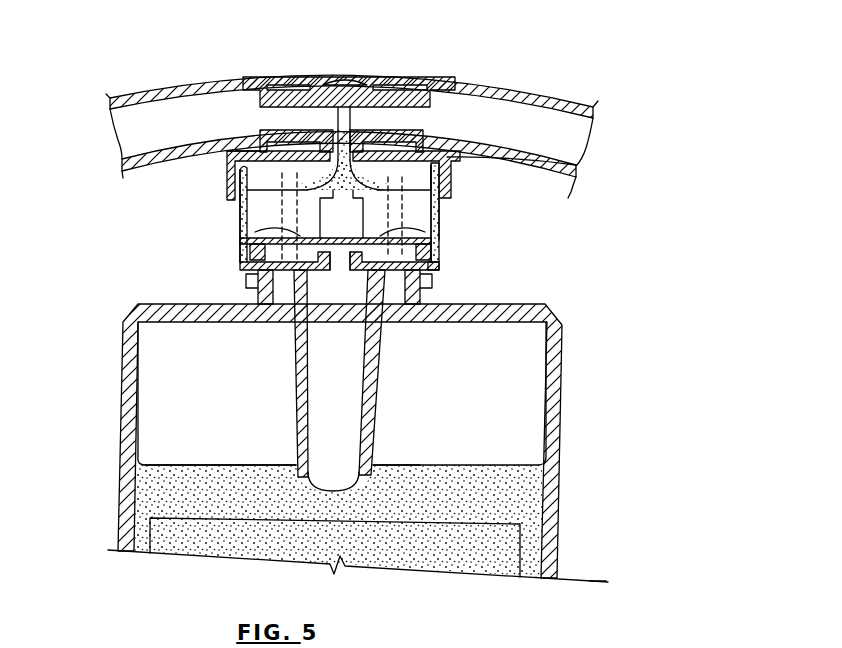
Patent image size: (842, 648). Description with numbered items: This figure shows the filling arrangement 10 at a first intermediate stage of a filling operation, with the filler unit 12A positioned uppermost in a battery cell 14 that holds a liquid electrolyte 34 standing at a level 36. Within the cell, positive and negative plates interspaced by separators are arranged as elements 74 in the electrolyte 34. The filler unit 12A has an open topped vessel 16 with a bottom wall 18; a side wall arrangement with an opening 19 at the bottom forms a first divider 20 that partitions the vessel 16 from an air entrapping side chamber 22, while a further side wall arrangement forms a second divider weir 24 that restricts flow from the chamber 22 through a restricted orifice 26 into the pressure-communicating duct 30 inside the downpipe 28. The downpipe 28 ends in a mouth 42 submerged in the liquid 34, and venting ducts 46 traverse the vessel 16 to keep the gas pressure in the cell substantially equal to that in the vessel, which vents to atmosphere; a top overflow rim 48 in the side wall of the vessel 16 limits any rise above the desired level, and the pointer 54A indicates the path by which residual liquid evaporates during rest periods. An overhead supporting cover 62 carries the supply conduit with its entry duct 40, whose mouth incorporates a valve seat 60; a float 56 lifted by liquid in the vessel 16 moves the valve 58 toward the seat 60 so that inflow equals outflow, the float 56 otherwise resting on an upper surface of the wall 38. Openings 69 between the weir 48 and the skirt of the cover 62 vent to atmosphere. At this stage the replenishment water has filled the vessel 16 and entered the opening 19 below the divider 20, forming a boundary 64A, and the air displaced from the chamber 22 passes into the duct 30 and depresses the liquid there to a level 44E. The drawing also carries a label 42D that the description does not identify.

The filling arrangement 10 is at (556, 240).
The filler unit 12A is at (390, 70).
The battery cell 14 is at (570, 433).
The open topped vessel 16 is at (242, 222).
The bottom wall 18 is at (258, 278).
The opening 19 is at (420, 276).
The first divider 20 is at (240, 258).
The side chamber 22 is at (418, 255).
The second divider weir 24 is at (440, 230).
The restricted orifice 26 is at (337, 272).
The downpipe 28 is at (375, 385).
The pressure-communicating duct 30 is at (344, 417).
The liquid electrolyte 34 is at (157, 491).
The level 36 is at (207, 463).
The wall 38 is at (262, 245).
The entry duct 40 is at (343, 133).
The mouth 42 is at (362, 494).
The stem guide 42D is at (262, 178).
The level 44E is at (335, 482).
The venting ducts 46 is at (238, 212).
The overflow rim 48 is at (447, 157).
The pointer 54A is at (262, 170).
The float 56 is at (440, 213).
The valve 58 is at (462, 221).
The valve seat 60 is at (368, 165).
The overhead supporting cover 62 is at (445, 172).
The boundary 64A is at (430, 259).
The openings 69 is at (327, 214).
The elements 74 is at (500, 523).